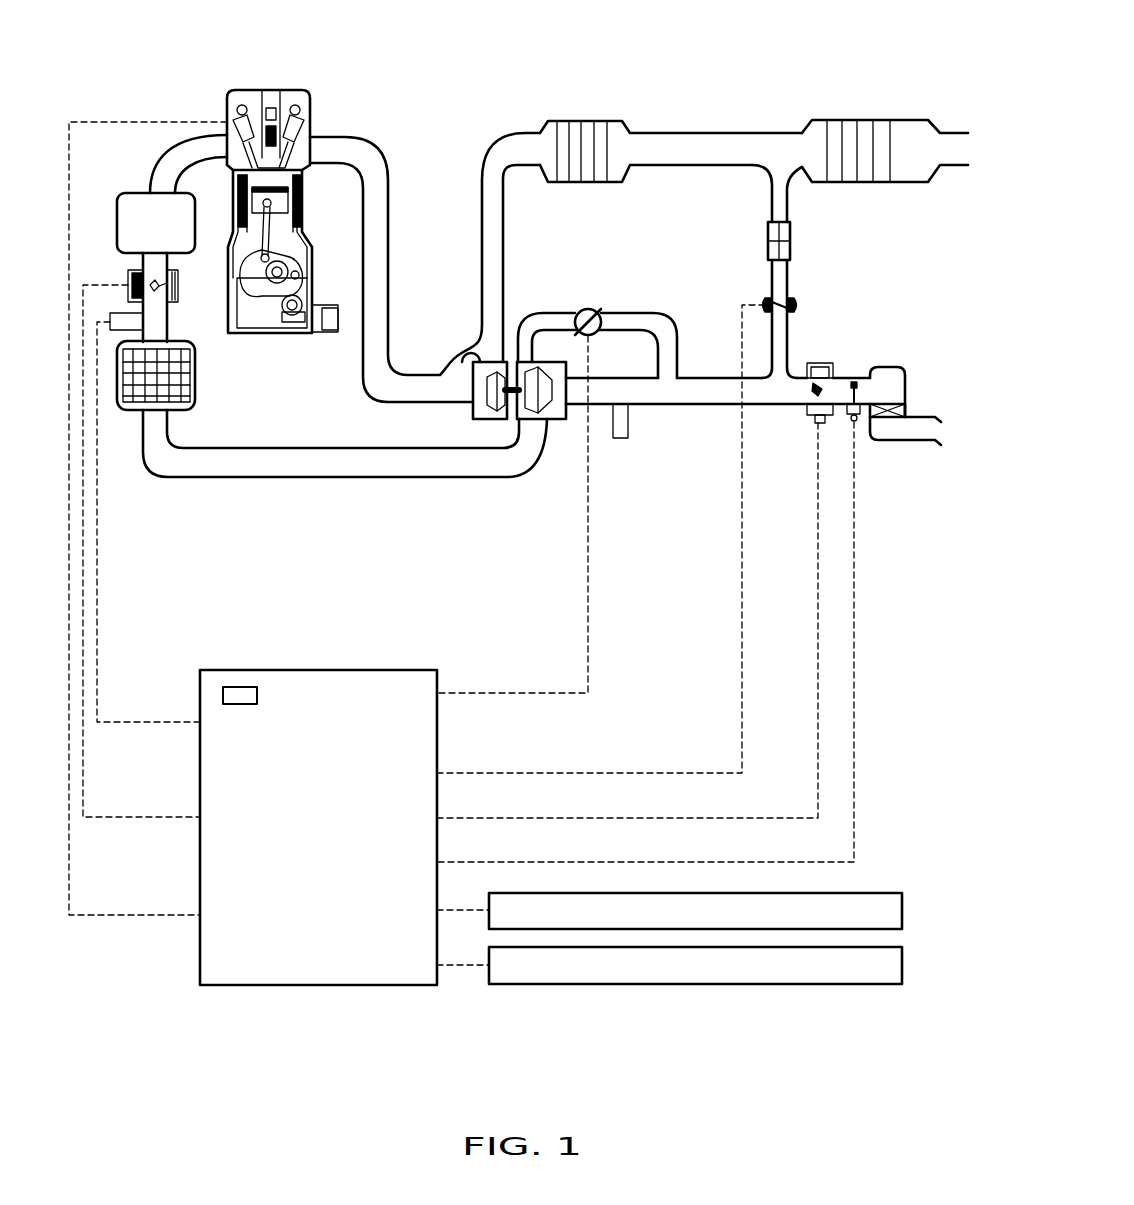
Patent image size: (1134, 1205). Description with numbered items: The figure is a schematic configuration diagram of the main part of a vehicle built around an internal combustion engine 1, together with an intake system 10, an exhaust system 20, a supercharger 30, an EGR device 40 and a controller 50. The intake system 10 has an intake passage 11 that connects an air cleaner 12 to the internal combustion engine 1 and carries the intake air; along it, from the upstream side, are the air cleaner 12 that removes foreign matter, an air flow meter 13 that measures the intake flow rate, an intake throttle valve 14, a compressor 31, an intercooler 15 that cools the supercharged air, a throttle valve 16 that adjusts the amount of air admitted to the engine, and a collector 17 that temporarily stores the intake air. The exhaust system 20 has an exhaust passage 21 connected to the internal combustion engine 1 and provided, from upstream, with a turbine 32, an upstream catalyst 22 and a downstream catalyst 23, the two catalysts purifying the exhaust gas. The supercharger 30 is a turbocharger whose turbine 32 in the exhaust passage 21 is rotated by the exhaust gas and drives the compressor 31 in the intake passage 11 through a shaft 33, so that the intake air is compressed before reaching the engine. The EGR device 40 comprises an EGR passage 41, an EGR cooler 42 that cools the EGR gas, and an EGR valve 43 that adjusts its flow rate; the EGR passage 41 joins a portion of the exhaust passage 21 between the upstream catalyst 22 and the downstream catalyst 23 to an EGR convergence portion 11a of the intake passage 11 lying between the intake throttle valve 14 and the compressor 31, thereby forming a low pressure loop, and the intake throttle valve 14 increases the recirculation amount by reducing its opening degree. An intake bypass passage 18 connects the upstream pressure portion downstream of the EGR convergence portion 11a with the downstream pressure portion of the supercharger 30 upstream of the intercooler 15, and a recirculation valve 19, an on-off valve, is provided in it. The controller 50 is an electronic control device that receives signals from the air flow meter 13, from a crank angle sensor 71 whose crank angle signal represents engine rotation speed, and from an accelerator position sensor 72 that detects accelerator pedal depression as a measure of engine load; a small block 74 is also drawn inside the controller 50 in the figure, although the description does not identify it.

The internal combustion engine 1 is at (268, 90).
The intake system 10 is at (918, 470).
The intake passage 11 is at (712, 405).
The EGR convergence portion 11a is at (790, 417).
The air cleaner 12 is at (905, 388).
The air flow meter 13 is at (856, 382).
The intake throttle valve 14 is at (822, 363).
The intercooler 15 is at (198, 375).
The throttle valve 16 is at (176, 298).
The collector 17 is at (140, 193).
The intake bypass passage 18 is at (562, 313).
The recirculation valve 19 is at (588, 309).
The exhaust system 20 is at (383, 103).
The exhaust passage 21 is at (388, 230).
The upstream catalyst 22 is at (586, 120).
The downstream catalyst 23 is at (845, 120).
The supercharger 30 is at (572, 547).
The compressor 31 is at (550, 420).
The turbine 32 is at (484, 420).
The shaft 33 is at (508, 420).
The EGR device 40 is at (812, 241).
The EGR passage 41 is at (772, 193).
The EGR cooler 42 is at (768, 240).
The EGR valve 43 is at (792, 302).
The controller 50 is at (318, 985).
The crank angle sensor 71 is at (903, 912).
The accelerator position sensor 72 is at (903, 967).
The memory 74 is at (240, 687).